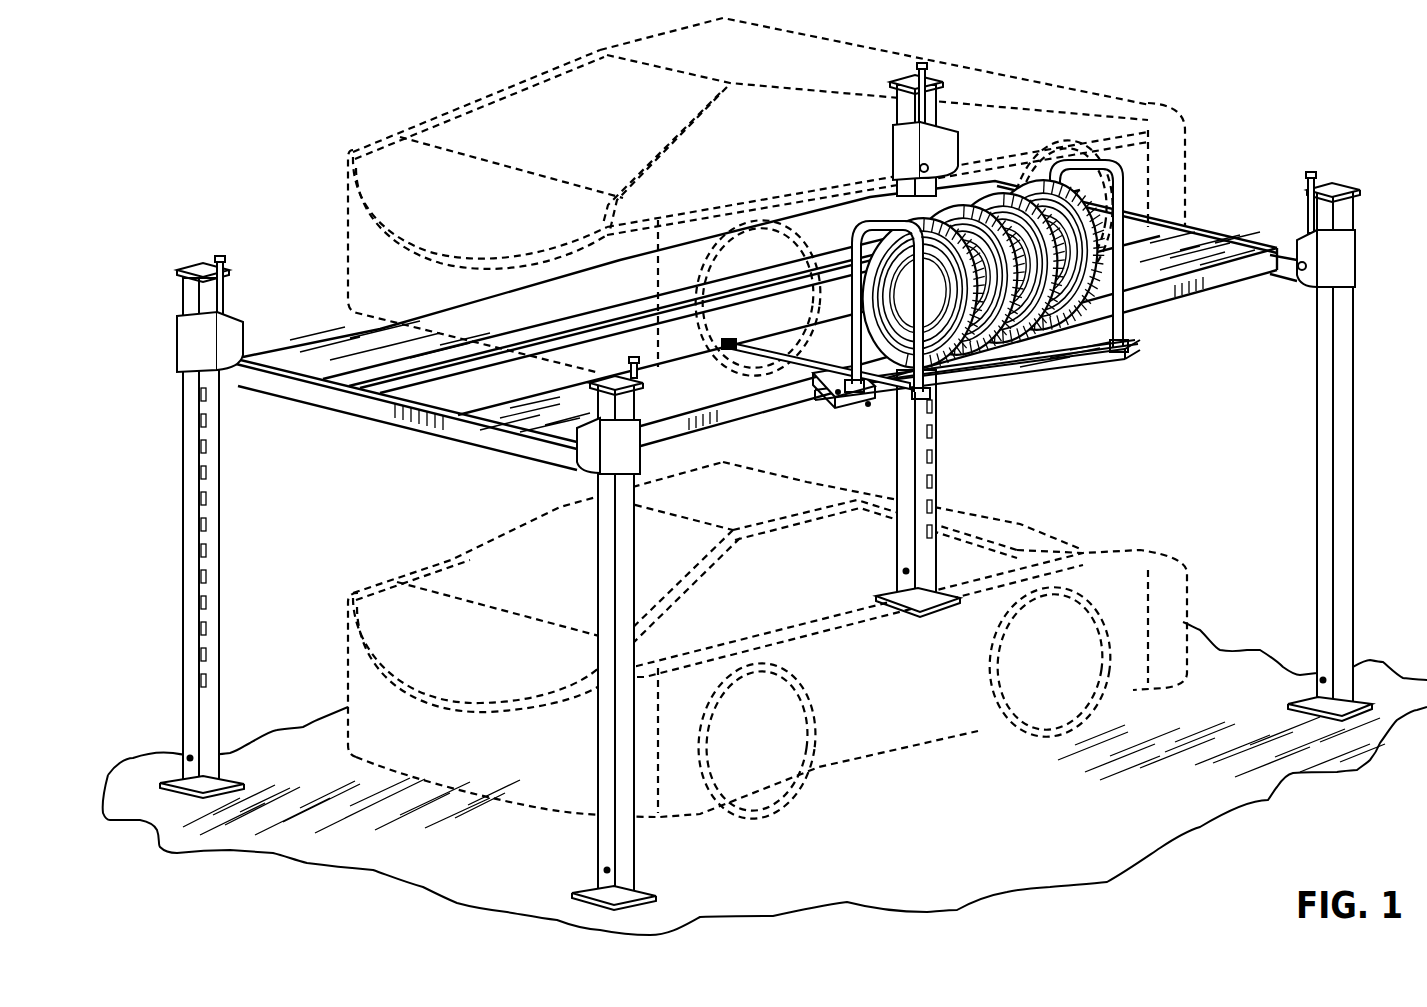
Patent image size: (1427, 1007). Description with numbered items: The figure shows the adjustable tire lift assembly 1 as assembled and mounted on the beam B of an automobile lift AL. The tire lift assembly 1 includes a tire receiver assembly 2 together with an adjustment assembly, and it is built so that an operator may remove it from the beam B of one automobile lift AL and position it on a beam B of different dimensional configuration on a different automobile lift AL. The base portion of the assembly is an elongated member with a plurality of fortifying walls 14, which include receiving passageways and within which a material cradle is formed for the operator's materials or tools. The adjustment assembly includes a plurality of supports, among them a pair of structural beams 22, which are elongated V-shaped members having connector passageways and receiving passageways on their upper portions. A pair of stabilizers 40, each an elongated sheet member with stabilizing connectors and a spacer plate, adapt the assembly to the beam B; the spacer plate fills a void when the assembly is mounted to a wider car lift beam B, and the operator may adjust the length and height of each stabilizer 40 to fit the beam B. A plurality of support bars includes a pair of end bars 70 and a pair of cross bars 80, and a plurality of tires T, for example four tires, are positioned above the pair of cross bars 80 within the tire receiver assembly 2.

The tire lift assembly 1 is at (1226, 147).
The automobile lift AL is at (227, 332).
The beam B is at (1249, 247).
The tire receiver assembly 2 is at (1130, 372).
The fortifying walls 14 is at (1058, 372).
The structural beams 22 is at (862, 395).
The stabilizer 40 is at (800, 366).
The end bars 70 is at (1113, 187).
The cross bars 80 is at (960, 347).
The tires T is at (1000, 357).